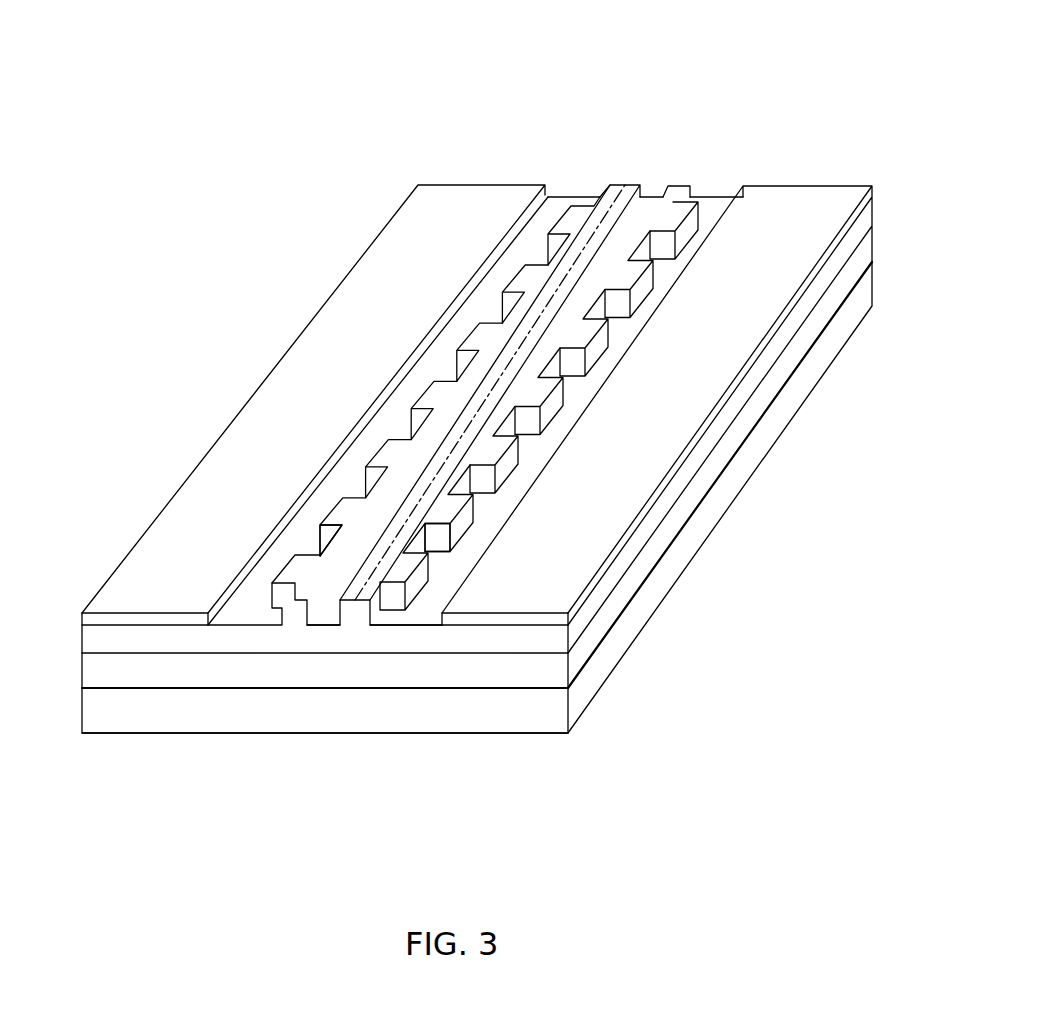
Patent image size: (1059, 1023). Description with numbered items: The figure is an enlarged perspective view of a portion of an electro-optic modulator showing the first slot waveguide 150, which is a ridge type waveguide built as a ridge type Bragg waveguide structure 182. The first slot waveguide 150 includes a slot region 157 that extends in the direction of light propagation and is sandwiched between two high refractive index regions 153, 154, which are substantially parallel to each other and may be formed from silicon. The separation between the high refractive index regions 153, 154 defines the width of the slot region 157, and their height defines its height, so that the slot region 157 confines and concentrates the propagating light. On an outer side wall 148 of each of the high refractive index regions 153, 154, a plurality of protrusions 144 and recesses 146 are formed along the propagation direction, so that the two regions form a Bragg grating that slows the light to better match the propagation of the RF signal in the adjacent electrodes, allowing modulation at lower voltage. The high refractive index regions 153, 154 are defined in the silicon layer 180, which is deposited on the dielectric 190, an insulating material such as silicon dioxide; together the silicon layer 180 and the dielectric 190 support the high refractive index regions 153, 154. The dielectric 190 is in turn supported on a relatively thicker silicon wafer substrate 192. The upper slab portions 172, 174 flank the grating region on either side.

The first slot waveguide 150 is at (645, 95).
The slot region 157 is at (620, 230).
The outer side wall 148 is at (592, 190).
The high refractive index region 153 is at (627, 185).
The high refractive index region 154 is at (688, 182).
The left upper slab 172 is at (358, 322).
The right upper slab 174 is at (680, 385).
The protrusions 144 is at (298, 563).
The recesses 146 is at (318, 545).
The silicon layer 180 is at (548, 640).
The dielectric 190 is at (548, 682).
The silicon wafer substrate 192 is at (348, 710).
The ridge type Bragg waveguide structure 182 is at (353, 625).